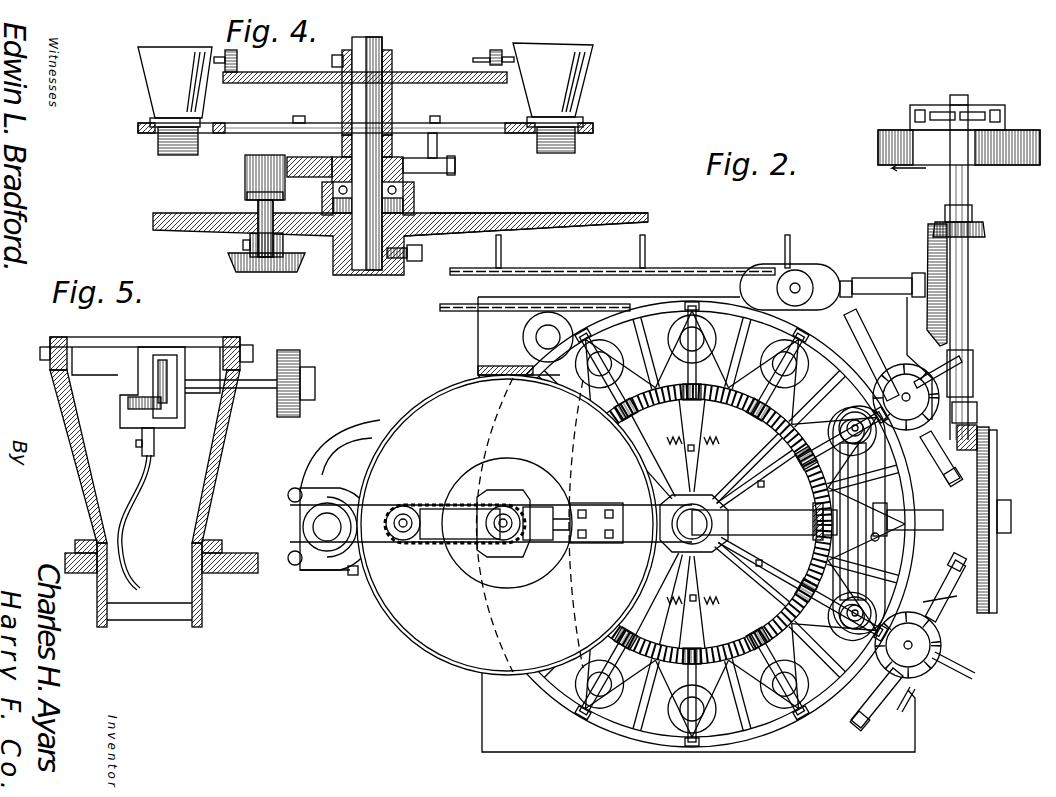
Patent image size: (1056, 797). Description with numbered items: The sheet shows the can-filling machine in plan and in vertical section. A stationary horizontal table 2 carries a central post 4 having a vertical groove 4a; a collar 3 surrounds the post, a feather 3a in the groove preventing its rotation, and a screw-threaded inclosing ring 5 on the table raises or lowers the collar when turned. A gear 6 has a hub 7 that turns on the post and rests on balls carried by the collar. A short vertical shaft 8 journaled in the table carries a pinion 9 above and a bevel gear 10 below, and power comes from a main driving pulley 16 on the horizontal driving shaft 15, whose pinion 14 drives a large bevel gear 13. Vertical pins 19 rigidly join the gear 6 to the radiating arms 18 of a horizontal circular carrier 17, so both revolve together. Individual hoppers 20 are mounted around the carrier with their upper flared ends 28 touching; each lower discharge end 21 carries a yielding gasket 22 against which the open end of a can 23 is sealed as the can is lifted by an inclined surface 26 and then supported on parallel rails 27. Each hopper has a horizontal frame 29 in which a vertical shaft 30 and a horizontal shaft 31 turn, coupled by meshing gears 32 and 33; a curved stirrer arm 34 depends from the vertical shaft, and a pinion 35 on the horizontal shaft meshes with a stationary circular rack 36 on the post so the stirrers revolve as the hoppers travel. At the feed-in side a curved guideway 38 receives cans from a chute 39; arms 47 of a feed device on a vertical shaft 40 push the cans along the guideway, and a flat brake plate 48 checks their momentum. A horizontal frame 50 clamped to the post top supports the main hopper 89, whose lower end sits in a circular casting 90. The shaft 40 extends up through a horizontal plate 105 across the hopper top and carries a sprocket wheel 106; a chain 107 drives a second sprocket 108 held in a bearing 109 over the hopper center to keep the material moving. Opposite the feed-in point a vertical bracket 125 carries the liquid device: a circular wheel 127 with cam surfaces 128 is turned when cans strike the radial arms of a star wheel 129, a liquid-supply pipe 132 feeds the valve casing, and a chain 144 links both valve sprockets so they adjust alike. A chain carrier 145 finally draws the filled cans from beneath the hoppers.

In FIG. 4, the stationary horizontal table 2 is at (497, 226).
In FIG. 2, the stationary horizontal table 2 is at (933, 722).
In FIG. 4, the collar 3 is at (327, 195).
In FIG. 4, the feather 3a is at (383, 217).
In FIG. 4, the central post 4 is at (370, 113).
In FIG. 2, the central post 4 is at (694, 523).
In FIG. 4, the vertical groove 4a is at (363, 182).
In FIG. 4, the inclosing ring 5 is at (414, 206).
In FIG. 4, the gear 6 is at (455, 166).
In FIG. 2, the gear 6 is at (748, 467).
In FIG. 4, the hub 7 is at (410, 180).
In FIG. 4, the short vertical shaft 8 is at (267, 220).
In FIG. 4, the pinion 9 is at (245, 168).
In FIG. 4, the bevel gear 10 is at (265, 272).
In FIG. 2, the large bevel gear 13 is at (987, 585).
In FIG. 2, the pinion 14 is at (977, 427).
In FIG. 2, the horizontal driving shaft 15 is at (943, 310).
In FIG. 2, the main driving pulley 16 is at (959, 133).
In FIG. 4, the horizontal circular carrier 17 is at (593, 129).
In FIG. 5, the horizontal circular carrier 17 is at (250, 573).
In FIG. 4, the arms 18 is at (282, 124).
In FIG. 2, the arms 18 is at (706, 524).
In FIG. 4, the vertical pins 19 is at (437, 148).
In FIG. 2, the vertical pins 19 is at (756, 479).
In FIG. 4, the individual hoppers 20 is at (163, 88).
In FIG. 5, the individual hoppers 20 is at (83, 485).
In FIG. 2, the individual hoppers 20 is at (683, 538).
In FIG. 5, the lower discharge end 21 is at (100, 583).
In FIG. 5, the gasket 22 is at (163, 613).
In FIG. 2, the can 23 is at (317, 507).
In FIG. 4, the inclined surface 26 is at (178, 213).
In FIG. 4, the parallel rails 27 is at (533, 213).
In FIG. 4, the upper flared ends 28 is at (557, 57).
In FIG. 5, the upper flared ends 28 is at (192, 342).
In FIG. 2, the upper flared ends 28 is at (692, 531).
In FIG. 5, the horizontal frame 29 is at (87, 385).
In FIG. 5, the vertical shaft 30 is at (148, 397).
In FIG. 5, the horizontal shaft 31 is at (258, 388).
In FIG. 5, the gear 32 is at (128, 405).
In FIG. 5, the gear 33 is at (167, 372).
In FIG. 5, the curved stirrer arm 34 is at (140, 503).
In FIG. 4, the pinion 35 is at (494, 53).
In FIG. 5, the pinion 35 is at (290, 350).
In FIG. 2, the pinion 35 is at (716, 524).
In FIG. 4, the stationary circular rack 36 is at (240, 75).
In FIG. 2, the stationary circular rack 36 is at (692, 524).
In FIG. 2, the curved can guideway 38 is at (323, 473).
In FIG. 2, the chute 39 is at (300, 522).
In FIG. 2, the vertical shaft 40 is at (405, 528).
In FIG. 2, the arms 47 is at (355, 575).
In FIG. 2, the flat plate 48 is at (353, 463).
In FIG. 2, the horizontal frame 50 is at (667, 540).
In FIG. 2, the main hopper 89 is at (507, 525).
In FIG. 2, the circular casting 90 is at (507, 523).
In FIG. 2, the horizontal plate 105 is at (450, 517).
In FIG. 2, the sprocket wheel 106 is at (403, 510).
In FIG. 2, the chain 107 is at (453, 553).
In FIG. 2, the sprocket 108 is at (497, 540).
In FIG. 2, the bearing 109 is at (530, 525).
In FIG. 2, the vertical bracket 125 is at (870, 728).
In FIG. 2, the circular wheel 127 is at (923, 650).
In FIG. 2, the cam surfaces 128 is at (940, 638).
In FIG. 2, the star wheel 129 is at (950, 673).
In FIG. 2, the liquid-supply pipe 132 is at (900, 567).
In FIG. 2, the chain 144 is at (893, 495).
In FIG. 2, the chain carrier 145 is at (697, 268).